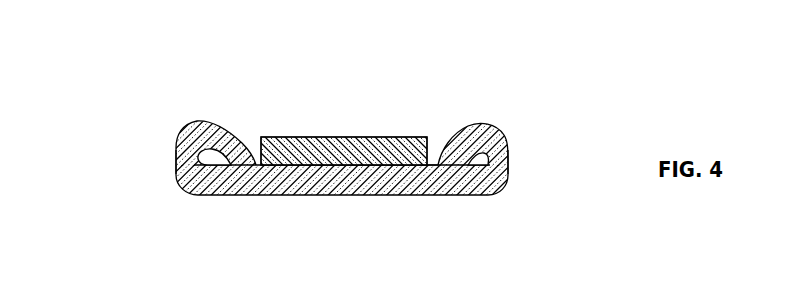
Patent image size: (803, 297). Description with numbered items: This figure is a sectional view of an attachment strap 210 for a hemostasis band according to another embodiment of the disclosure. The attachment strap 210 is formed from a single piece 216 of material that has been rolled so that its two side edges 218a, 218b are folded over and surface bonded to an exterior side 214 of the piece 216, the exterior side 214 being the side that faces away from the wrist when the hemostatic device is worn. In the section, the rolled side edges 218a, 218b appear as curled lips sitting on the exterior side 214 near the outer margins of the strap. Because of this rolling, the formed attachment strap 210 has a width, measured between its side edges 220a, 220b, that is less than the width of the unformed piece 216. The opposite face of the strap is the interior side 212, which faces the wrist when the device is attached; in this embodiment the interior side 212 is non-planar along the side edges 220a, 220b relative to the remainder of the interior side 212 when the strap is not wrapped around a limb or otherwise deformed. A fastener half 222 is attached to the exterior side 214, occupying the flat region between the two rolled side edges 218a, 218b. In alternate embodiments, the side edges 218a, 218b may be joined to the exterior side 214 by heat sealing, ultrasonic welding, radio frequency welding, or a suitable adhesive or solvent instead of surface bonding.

The attachment strap 210 is at (345, 145).
The interior side 212 is at (344, 188).
The exterior side 214 is at (433, 156).
The piece 216 is at (252, 178).
The side edge 218a is at (240, 165).
The side edge 218b is at (439, 162).
The side edge 220a is at (167, 168).
The side edge 220b is at (519, 166).
The fastener half 222 is at (335, 150).